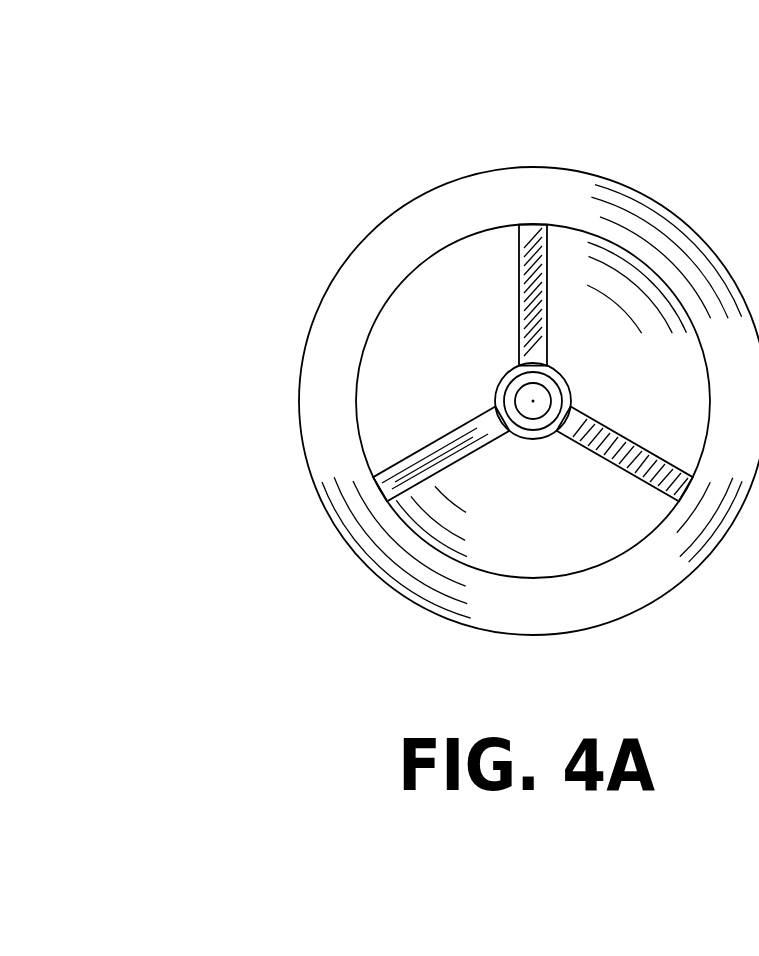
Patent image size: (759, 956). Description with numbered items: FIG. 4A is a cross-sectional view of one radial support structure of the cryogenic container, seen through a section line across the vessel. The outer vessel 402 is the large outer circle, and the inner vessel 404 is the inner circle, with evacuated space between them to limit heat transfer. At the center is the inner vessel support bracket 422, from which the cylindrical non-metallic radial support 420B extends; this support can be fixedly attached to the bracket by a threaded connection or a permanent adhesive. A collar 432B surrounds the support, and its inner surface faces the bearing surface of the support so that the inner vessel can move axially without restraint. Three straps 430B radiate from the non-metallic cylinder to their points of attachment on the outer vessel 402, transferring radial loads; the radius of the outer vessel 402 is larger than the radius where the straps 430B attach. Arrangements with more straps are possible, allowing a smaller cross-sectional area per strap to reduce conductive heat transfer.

The outer vessel 402 is at (463, 209).
The inner vessel 404 is at (482, 283).
The inner vessel support bracket 422 is at (503, 368).
The collar 432B is at (513, 385).
The non-metallic radial support 420B is at (513, 400).
The straps 430B is at (428, 465).